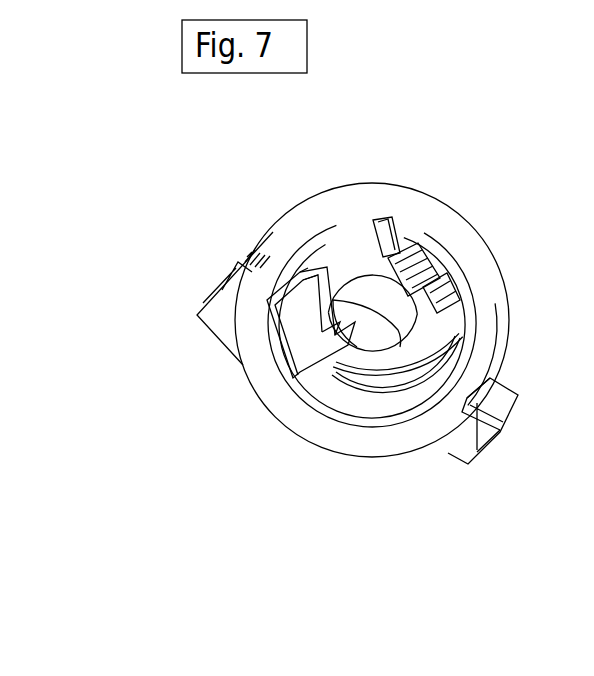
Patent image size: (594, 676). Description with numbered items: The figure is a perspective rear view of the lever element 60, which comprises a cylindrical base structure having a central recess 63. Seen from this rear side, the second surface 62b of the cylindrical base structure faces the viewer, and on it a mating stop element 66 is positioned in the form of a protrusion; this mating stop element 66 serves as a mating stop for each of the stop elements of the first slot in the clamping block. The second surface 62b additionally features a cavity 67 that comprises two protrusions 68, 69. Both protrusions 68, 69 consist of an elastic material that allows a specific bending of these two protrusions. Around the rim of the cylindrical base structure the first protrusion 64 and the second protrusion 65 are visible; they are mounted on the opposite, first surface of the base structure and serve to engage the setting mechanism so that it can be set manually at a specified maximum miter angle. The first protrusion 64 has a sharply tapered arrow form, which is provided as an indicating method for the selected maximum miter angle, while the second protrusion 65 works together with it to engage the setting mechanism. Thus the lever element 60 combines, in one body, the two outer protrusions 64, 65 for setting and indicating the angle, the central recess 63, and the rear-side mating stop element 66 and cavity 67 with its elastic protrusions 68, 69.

The lever element 60 is at (311, 430).
The second surface of the cylindrical base structure 62b is at (393, 413).
The central recess 63 is at (365, 292).
The first protrusion 64 is at (216, 290).
The second protrusion 65 is at (455, 448).
The mating stop element 66 is at (303, 338).
The cavity 67 is at (398, 235).
The protrusion 68 is at (413, 257).
The protrusion 69 is at (437, 293).